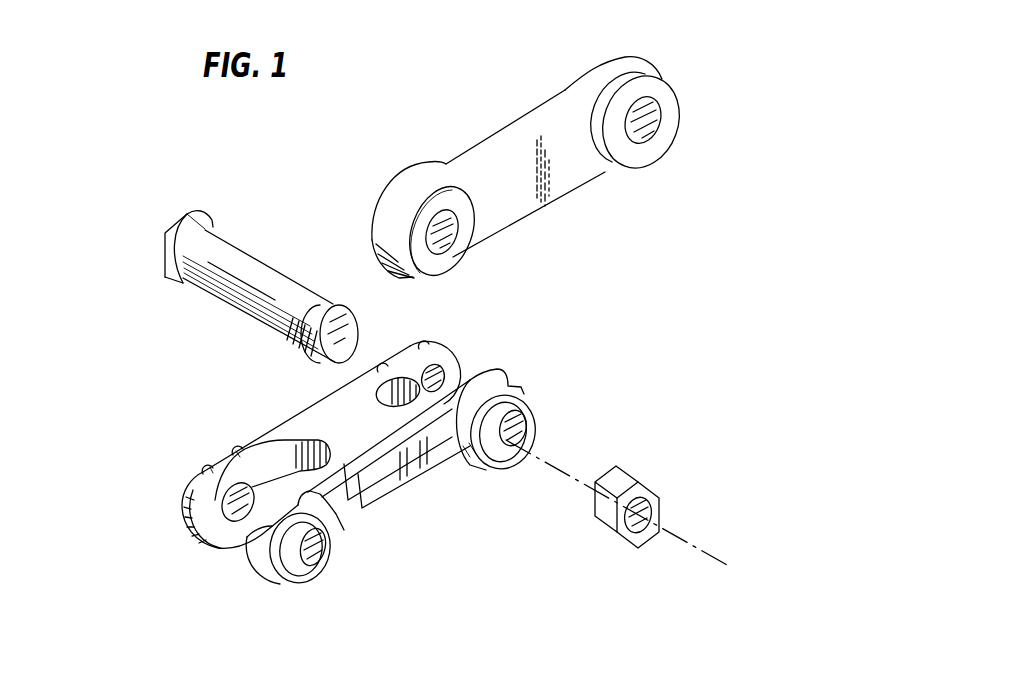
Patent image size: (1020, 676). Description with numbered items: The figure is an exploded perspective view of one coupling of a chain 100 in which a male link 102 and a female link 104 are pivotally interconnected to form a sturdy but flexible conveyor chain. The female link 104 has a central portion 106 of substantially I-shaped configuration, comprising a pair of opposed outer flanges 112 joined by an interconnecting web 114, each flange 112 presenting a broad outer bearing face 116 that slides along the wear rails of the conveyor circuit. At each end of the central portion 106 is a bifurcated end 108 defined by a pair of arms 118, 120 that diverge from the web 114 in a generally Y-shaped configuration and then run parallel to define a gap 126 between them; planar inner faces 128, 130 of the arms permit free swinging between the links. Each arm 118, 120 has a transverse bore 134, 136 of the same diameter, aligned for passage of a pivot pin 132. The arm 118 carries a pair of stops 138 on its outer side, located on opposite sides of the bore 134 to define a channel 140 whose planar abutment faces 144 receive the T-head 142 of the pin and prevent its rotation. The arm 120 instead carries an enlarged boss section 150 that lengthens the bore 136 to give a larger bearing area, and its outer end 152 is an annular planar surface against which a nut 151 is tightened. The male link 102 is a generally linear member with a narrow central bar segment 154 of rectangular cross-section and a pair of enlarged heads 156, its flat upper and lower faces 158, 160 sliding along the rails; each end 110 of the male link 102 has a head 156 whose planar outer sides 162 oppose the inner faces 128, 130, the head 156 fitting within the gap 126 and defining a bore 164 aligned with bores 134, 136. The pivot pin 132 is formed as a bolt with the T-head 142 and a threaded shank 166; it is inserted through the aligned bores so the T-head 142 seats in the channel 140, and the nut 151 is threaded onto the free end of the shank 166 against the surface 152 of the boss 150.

The chain 100 is at (120, 126).
The male link 102 is at (517, 113).
The female link 104 is at (503, 524).
The central portion 106 is at (333, 396).
The bifurcated ends 108 is at (531, 374).
The end of male link 110 is at (627, 60).
The outer flanges 112 is at (306, 418).
The web 114 is at (387, 492).
The bearing face 116 is at (370, 441).
The arm 118 is at (478, 356).
The arm 120 is at (522, 388).
The gap 126 is at (513, 366).
The inner face 128 is at (213, 538).
The inner face 130 is at (240, 556).
The pivot pin 132 is at (253, 256).
The bore 134 is at (386, 466).
The bore 136 is at (514, 442).
The stops 138 is at (386, 357).
The channel 140 is at (403, 340).
The T-head 142 is at (182, 222).
The abutment faces 144 is at (208, 462).
The boss section 150 is at (488, 470).
The nut 151 is at (652, 480).
The outer end of boss 152 is at (531, 414).
The central bar segment 154 is at (553, 178).
The heads 156 is at (382, 240).
The upper face 158 is at (487, 143).
The lower face 160 is at (522, 219).
The outer sides of head 162 is at (450, 256).
The bore 164 is at (448, 212).
The threaded shank 166 is at (290, 334).